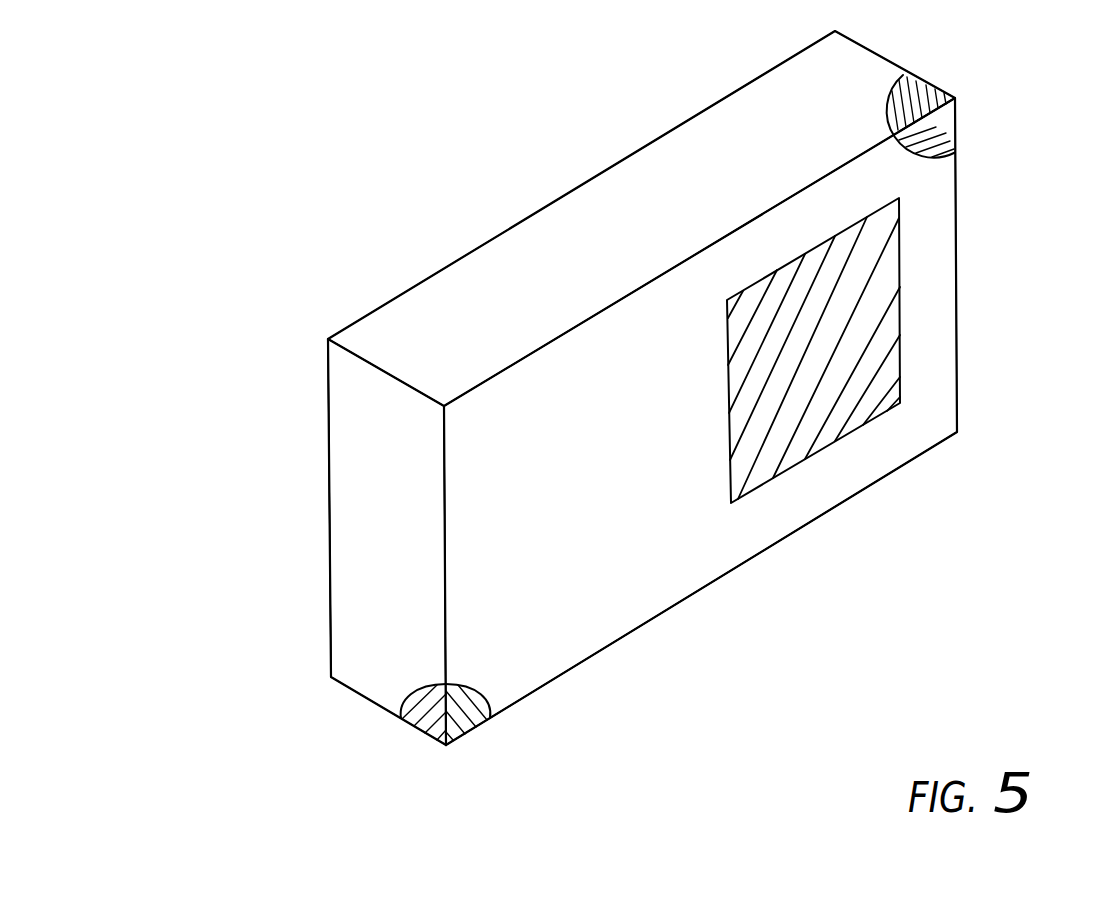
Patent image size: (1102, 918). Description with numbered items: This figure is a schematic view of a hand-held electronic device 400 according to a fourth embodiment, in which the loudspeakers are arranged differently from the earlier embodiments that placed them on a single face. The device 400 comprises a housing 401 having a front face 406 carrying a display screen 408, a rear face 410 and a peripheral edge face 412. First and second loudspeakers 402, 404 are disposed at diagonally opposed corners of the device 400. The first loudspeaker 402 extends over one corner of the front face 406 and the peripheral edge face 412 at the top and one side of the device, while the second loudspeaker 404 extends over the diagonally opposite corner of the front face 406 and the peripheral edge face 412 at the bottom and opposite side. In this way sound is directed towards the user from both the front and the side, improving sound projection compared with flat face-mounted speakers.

The hand-held electronic device 400 is at (302, 194).
The housing 401 is at (678, 603).
The first loudspeaker 402 is at (957, 123).
The second loudspeaker 404 is at (471, 728).
The front face 406 is at (577, 602).
The display screen 408 is at (815, 425).
The rear face 410 is at (327, 467).
The peripheral edge face 412 is at (610, 207).